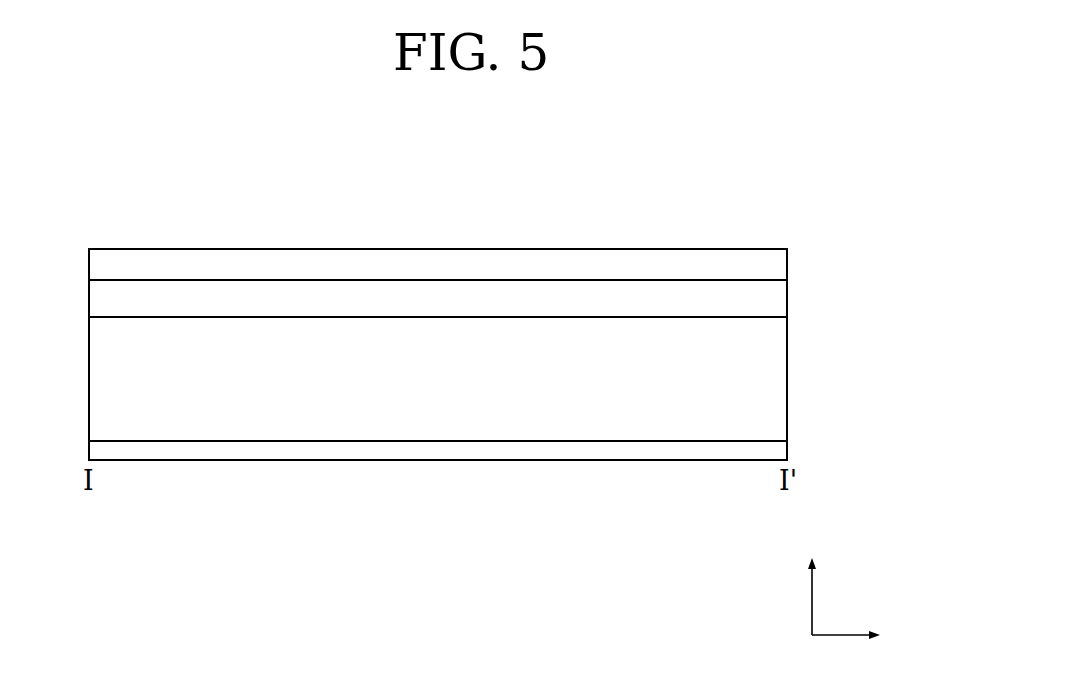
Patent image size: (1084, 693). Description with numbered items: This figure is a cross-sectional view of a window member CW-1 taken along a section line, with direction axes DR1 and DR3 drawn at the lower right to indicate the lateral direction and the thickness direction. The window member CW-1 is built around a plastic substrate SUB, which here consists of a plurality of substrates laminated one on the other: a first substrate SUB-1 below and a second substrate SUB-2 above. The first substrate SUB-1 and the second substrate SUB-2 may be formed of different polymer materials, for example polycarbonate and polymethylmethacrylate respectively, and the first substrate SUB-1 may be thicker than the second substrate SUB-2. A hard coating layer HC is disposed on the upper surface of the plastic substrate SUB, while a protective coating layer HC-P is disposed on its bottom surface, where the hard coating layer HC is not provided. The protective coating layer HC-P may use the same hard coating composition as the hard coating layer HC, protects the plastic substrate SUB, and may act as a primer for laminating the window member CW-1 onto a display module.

The window member CW-1 is at (738, 182).
The hard coating layer HC is at (773, 266).
The plastic substrate SUB is at (523, 360).
The second substrate SUB-2 is at (773, 302).
The first substrate SUB-1 is at (773, 379).
The protective coating layer HC-P is at (773, 453).
The third direction DR3 is at (812, 582).
The first direction DR1 is at (866, 635).